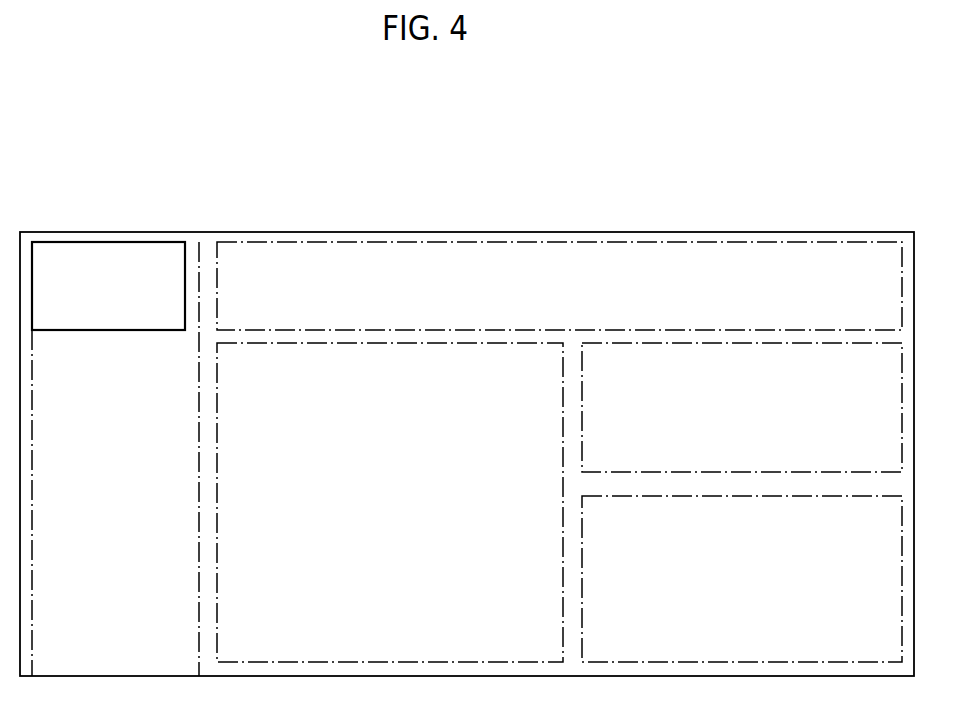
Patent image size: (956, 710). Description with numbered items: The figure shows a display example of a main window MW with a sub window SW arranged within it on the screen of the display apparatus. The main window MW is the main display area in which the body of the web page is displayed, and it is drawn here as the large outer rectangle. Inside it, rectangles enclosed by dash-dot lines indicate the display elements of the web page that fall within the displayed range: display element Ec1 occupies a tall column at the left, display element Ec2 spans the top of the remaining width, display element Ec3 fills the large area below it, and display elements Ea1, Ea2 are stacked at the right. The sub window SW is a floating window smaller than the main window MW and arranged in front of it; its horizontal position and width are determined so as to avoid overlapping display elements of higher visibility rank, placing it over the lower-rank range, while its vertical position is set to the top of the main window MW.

The main window MW is at (867, 232).
The sub window SW is at (117, 241).
The display element Ec1 is at (115, 459).
The display element Ec2 is at (559, 286).
The display element Ec3 is at (390, 502).
The display element Ea1 is at (742, 407).
The display element Ea2 is at (742, 579).